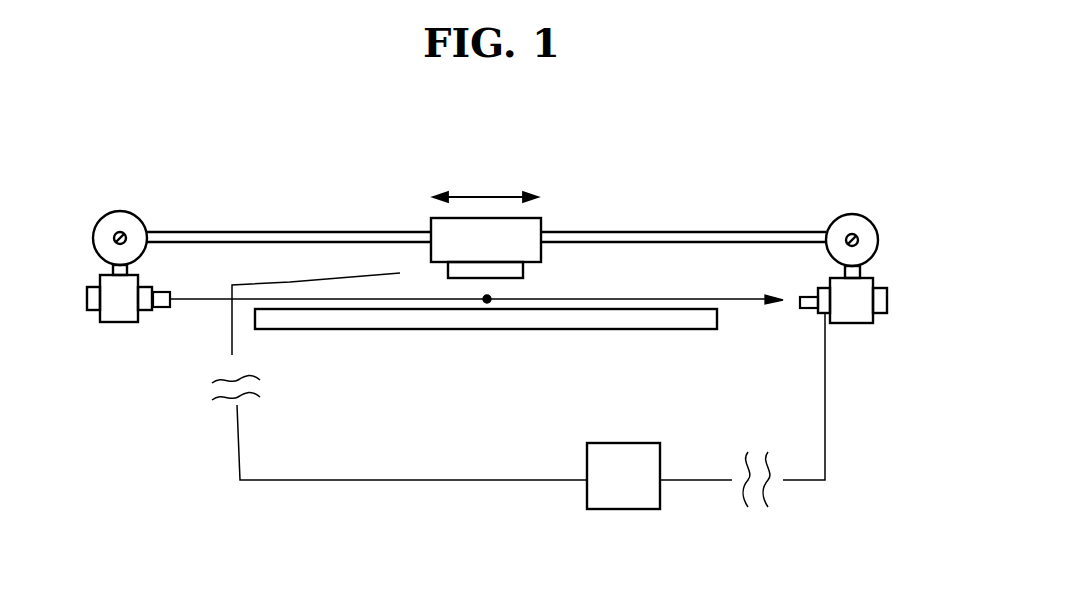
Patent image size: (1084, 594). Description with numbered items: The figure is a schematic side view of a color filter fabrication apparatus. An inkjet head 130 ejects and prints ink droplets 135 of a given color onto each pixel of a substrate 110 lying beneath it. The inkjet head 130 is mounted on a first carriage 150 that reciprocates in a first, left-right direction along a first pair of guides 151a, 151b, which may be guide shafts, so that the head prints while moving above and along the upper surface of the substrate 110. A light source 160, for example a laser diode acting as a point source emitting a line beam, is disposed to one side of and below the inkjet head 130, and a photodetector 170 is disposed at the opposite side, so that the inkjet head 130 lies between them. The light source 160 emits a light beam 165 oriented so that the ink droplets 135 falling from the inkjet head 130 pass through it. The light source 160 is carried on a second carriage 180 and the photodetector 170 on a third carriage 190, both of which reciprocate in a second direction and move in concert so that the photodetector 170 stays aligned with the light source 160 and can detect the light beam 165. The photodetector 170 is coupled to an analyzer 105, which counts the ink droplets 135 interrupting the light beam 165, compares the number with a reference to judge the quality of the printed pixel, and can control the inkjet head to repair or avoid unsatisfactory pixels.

The analyzer 105 is at (622, 509).
The substrate 110 is at (553, 329).
The inkjet head 130 is at (523, 275).
The ink droplets 135 is at (487, 299).
The first carriage 150 is at (535, 228).
The guide 151a is at (730, 233).
The guide 151b is at (486, 237).
The light source 160 is at (160, 310).
The light beam 165 is at (630, 298).
The photodetector 170 is at (813, 312).
The second carriage 180 is at (107, 323).
The third carriage 190 is at (858, 325).